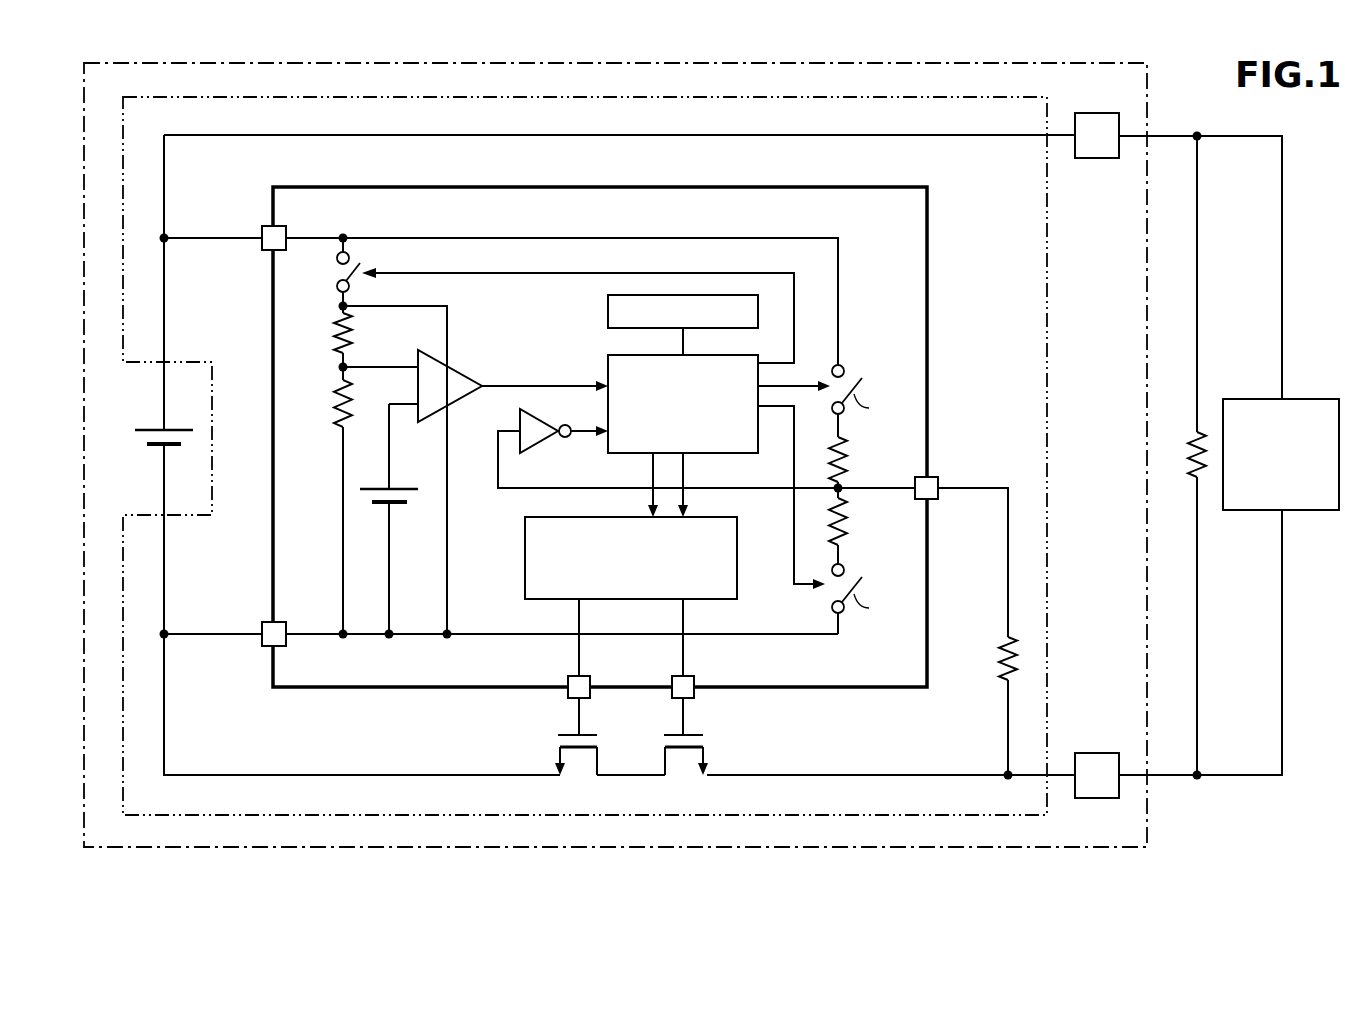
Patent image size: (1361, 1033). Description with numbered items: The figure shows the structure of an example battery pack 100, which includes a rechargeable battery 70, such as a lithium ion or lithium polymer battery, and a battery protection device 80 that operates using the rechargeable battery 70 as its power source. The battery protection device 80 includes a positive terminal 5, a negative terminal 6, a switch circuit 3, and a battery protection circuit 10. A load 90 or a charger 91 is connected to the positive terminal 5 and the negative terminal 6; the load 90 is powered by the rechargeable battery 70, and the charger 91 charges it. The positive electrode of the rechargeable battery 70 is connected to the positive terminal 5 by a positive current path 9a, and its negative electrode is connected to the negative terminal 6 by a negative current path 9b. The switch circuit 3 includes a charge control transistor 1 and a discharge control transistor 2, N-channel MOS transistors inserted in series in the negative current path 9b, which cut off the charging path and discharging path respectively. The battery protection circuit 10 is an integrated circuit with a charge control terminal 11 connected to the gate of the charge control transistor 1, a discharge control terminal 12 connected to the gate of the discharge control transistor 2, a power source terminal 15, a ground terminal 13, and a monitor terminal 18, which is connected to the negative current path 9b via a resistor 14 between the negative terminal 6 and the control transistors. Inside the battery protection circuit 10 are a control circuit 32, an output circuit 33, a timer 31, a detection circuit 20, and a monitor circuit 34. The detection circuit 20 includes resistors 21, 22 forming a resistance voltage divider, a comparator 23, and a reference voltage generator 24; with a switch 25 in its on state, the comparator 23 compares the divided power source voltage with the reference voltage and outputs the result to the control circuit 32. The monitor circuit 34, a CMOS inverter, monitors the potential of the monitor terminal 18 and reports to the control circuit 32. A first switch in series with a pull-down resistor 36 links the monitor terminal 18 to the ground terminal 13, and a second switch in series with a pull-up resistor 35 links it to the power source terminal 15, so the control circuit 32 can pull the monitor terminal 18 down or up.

The battery pack 100 is at (1078, 63).
The battery protection device 80 is at (985, 96).
The battery protection circuit 10 is at (880, 187).
The positive current path 9a is at (620, 135).
The negative current path 9b is at (370, 775).
The positive terminal 5 is at (1097, 158).
The negative terminal 6 is at (1097, 753).
The power source terminal 15 is at (262, 250).
The ground terminal 13 is at (262, 622).
The monitor terminal 18 is at (938, 477).
The discharge control terminal 12 is at (590, 698).
The charge control terminal 11 is at (672, 698).
The charge control transistor 1 is at (665, 773).
The discharge control transistor 2 is at (598, 773).
The switch circuit 3 is at (631, 737).
The resistor 14 is at (997, 660).
The rechargeable battery 70 is at (135, 430).
The load 90 is at (1190, 452).
The charger 91 is at (1290, 399).
The detection circuit 20 is at (564, 436).
The resistor 21 is at (352, 335).
The resistor 22 is at (352, 403).
The comparator 23 is at (460, 372).
The reference voltage generator 24 is at (398, 503).
The switch 25 is at (352, 268).
The timer 31 is at (715, 296).
The control circuit 32 is at (715, 355).
The output circuit 33 is at (697, 517).
The monitor circuit 34 is at (540, 421).
The pull-up resistor 35 is at (848, 456).
The pull-down resistor 36 is at (848, 518).